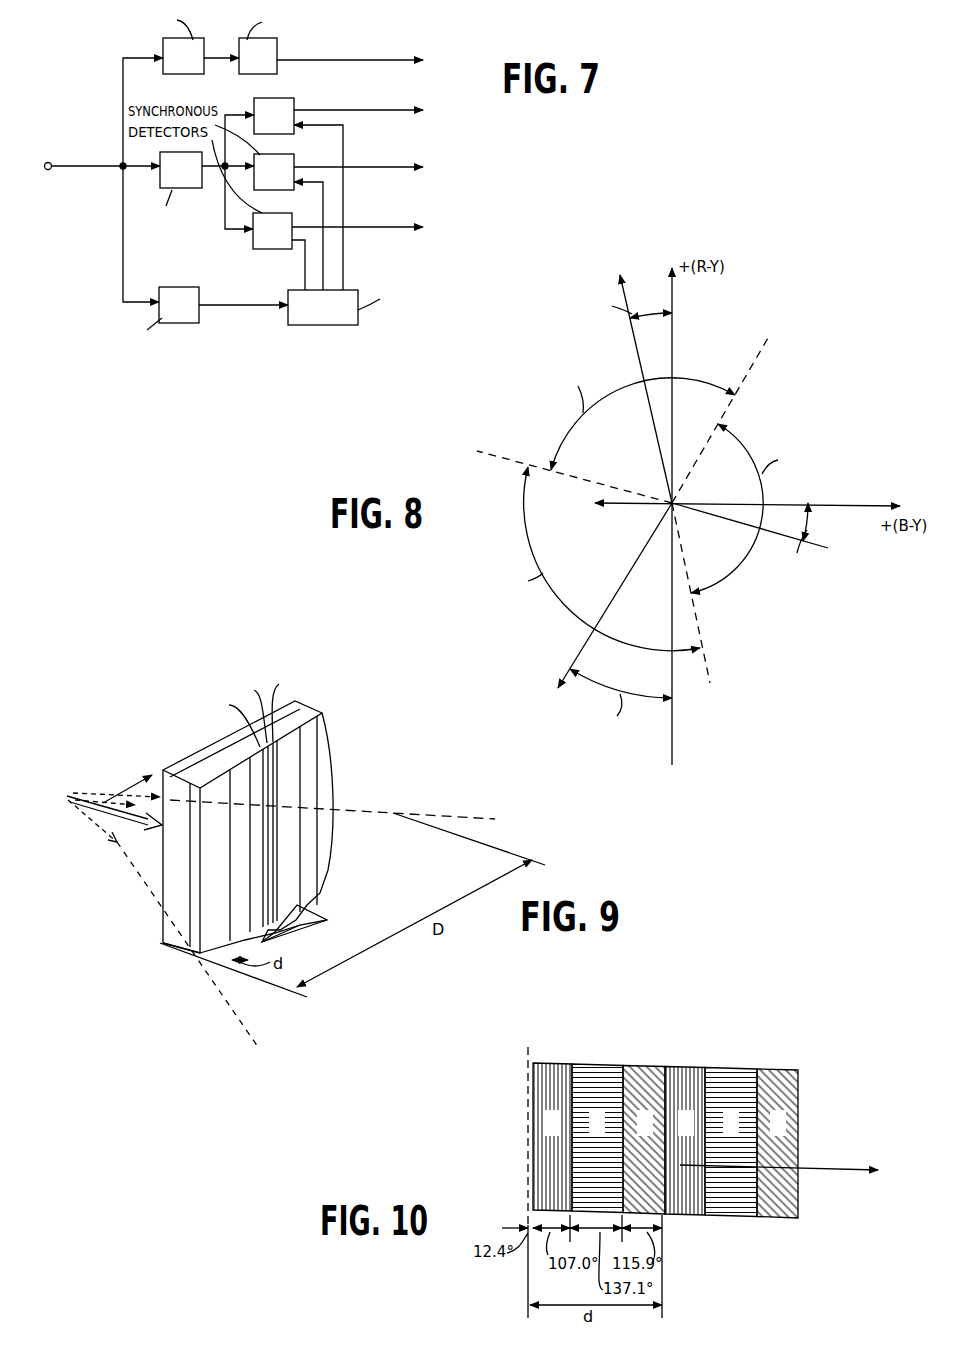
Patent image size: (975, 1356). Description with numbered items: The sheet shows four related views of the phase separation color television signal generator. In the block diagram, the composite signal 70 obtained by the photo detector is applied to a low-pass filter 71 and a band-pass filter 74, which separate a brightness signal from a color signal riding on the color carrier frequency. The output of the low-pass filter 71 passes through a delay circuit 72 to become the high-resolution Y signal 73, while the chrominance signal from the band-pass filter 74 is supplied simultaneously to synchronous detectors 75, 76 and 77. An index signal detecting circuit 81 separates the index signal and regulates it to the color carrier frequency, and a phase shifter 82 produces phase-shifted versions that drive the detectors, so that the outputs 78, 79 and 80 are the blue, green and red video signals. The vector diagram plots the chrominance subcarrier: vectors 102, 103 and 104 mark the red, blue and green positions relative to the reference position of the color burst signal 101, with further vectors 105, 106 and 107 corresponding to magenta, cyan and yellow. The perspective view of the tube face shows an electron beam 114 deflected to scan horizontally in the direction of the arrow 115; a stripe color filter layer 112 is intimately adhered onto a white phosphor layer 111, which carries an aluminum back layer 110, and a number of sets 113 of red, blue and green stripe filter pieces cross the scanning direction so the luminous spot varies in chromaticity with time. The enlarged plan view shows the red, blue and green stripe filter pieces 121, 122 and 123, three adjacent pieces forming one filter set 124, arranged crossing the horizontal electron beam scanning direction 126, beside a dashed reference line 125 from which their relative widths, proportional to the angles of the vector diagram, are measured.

In FIG. 7, the composite signal 70 is at (77, 165).
In FIG. 7, the low-pass filter 71 is at (176, 41).
In FIG. 7, the delay circuit 72 is at (256, 41).
In FIG. 7, the Y signal 73 is at (361, 57).
In FIG. 7, the band-pass filter 74 is at (203, 172).
In FIG. 7, the synchronous detector 75 is at (274, 116).
In FIG. 7, the synchronous detector 76 is at (274, 172).
In FIG. 7, the synchronous detector 77 is at (272, 231).
In FIG. 7, the blue video signal output 78 is at (370, 106).
In FIG. 7, the green video signal output 79 is at (370, 163).
In FIG. 7, the red video signal output 80 is at (369, 223).
In FIG. 7, the index signal detecting circuit 81 is at (145, 327).
In FIG. 7, the phase shifter 82 is at (320, 225).
In FIG. 8, the color burst signal reference position 101 is at (617, 507).
In FIG. 8, the red vector 102 is at (628, 300).
In FIG. 8, the blue vector 103 is at (810, 550).
In FIG. 8, the green vector 104 is at (580, 652).
In FIG. 8, the magenta vector 105 is at (768, 340).
In FIG. 8, the cyan vector 106 is at (708, 663).
In FIG. 8, the yellow vector 107 is at (503, 455).
In FIG. 9, the aluminum back layer 110 is at (162, 895).
In FIG. 9, the white phosphor layer 111 is at (185, 920).
In FIG. 9, the stripe color filter layer 112 is at (193, 945).
In FIG. 9, the sets of stripe filter pieces 113 is at (327, 920).
In FIG. 9, the electron beam 114 is at (70, 800).
In FIG. 9, the scanning direction arrow 115 is at (127, 787).
In FIG. 10, the red stripe filter piece 121 is at (555, 1077).
In FIG. 10, the blue stripe filter piece 122 is at (605, 1080).
In FIG. 10, the green stripe filter piece 123 is at (725, 1124).
In FIG. 10, the filter set 124 is at (680, 1105).
In FIG. 10, the reference line 125 is at (528, 1066).
In FIG. 10, the horizontal electron beam scanning direction 126 is at (832, 1172).